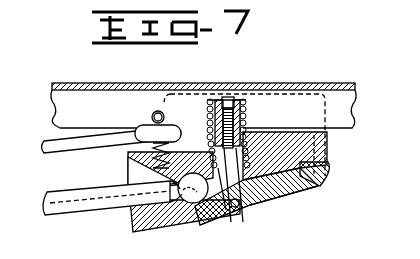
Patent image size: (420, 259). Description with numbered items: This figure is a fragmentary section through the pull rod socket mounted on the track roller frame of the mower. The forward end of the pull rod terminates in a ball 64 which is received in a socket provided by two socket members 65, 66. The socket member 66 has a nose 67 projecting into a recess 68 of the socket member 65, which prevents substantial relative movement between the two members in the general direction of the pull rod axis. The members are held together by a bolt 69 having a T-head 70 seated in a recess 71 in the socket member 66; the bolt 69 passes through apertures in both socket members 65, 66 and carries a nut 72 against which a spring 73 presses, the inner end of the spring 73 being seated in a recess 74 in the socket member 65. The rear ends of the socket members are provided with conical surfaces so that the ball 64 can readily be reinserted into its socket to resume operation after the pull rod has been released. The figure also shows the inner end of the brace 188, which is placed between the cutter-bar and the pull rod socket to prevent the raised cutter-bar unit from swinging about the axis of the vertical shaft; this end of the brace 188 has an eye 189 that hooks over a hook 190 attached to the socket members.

The ball 64 is at (198, 225).
The socket member 65 is at (360, 160).
The socket member 66 is at (307, 197).
The nose 67 is at (320, 172).
The recess 68 is at (318, 175).
The bolt 69 is at (257, 200).
The T-head 70 is at (240, 207).
The recess 71 is at (230, 212).
The nut 72 is at (230, 95).
The spring 73 is at (247, 97).
The recess 74 is at (253, 130).
The brace 188 is at (48, 153).
The eye 189 is at (140, 128).
The hook 190 is at (158, 111).